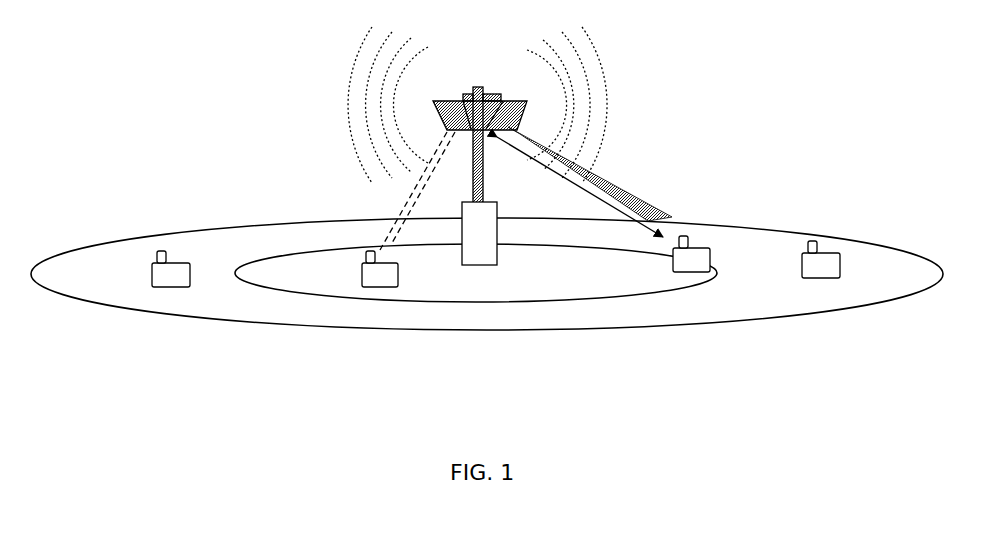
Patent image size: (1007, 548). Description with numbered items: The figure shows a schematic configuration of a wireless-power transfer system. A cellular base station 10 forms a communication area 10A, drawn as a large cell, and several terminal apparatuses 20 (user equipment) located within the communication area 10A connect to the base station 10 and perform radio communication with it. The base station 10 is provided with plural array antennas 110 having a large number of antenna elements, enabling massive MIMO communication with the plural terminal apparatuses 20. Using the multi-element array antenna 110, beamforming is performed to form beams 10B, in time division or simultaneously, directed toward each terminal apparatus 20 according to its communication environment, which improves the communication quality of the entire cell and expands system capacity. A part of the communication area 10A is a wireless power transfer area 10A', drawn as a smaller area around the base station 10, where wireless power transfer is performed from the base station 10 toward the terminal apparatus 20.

The cellular base station 10 is at (477, 133).
The array antenna 110 is at (470, 98).
The communication area 10A is at (487, 303).
The wireless power transfer area 10A' is at (476, 312).
The beam 10B is at (610, 187).
The terminal apparatus 20 is at (172, 288).